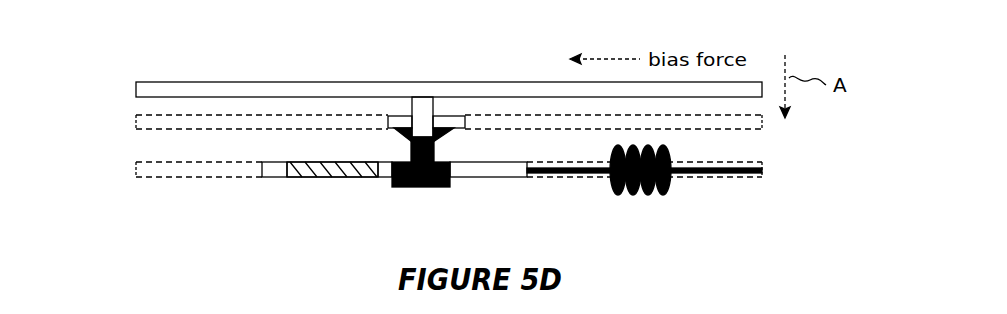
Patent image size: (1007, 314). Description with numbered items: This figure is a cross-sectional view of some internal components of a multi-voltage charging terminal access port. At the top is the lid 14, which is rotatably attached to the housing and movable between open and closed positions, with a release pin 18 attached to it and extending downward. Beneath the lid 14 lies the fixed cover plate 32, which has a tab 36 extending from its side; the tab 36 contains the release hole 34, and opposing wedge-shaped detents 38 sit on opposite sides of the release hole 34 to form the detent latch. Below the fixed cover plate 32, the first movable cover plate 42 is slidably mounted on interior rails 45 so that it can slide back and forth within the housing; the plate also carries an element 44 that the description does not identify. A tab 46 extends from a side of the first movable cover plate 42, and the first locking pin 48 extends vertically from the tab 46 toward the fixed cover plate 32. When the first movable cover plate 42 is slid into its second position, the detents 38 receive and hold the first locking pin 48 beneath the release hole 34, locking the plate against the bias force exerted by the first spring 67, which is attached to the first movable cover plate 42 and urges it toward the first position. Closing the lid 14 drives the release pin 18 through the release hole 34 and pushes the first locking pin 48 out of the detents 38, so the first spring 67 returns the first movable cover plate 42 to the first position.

The lid 14 is at (168, 93).
The release pin 18 is at (425, 105).
The fixed cover plate 32 is at (136, 128).
The release hole 34 is at (410, 120).
The tab 36 is at (458, 120).
The wedge-shaped detents 38 is at (394, 134).
The first movable cover plate 42 is at (270, 178).
The hatched section 44 is at (336, 178).
The interior rails 45 is at (136, 170).
The tab 46 is at (396, 188).
The first locking pin 48 is at (435, 145).
The first spring 67 is at (663, 195).